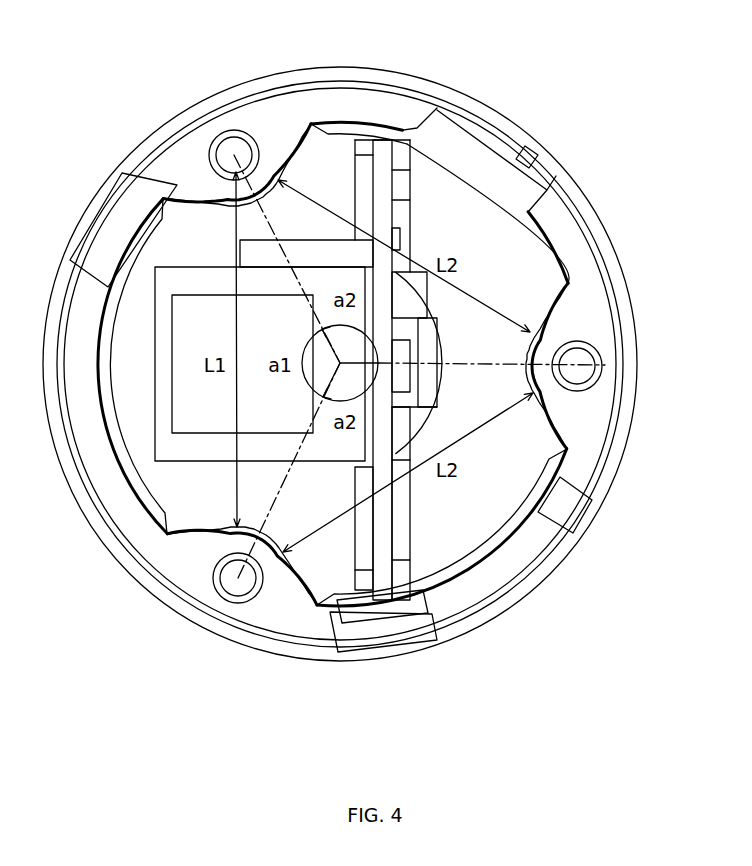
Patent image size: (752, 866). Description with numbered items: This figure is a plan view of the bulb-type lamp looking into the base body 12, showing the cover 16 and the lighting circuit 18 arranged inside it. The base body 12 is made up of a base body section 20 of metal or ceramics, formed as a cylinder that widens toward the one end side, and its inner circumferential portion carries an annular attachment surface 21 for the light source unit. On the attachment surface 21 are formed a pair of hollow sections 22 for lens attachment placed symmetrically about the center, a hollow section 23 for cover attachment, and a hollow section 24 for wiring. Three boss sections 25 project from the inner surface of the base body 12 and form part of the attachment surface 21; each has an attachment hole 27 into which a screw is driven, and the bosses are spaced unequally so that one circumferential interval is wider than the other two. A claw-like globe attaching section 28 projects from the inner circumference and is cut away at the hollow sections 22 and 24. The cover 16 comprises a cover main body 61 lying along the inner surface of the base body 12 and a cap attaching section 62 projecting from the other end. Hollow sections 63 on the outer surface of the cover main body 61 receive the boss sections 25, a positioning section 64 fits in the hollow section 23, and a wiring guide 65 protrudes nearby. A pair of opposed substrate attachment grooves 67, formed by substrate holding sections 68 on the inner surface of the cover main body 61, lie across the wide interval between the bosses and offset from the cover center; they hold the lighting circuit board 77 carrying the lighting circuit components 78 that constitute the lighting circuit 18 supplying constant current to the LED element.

The base body 12 is at (346, 364).
The cover 16 is at (96, 432).
The lighting circuit 18 is at (402, 503).
The base body section 20 is at (562, 177).
The attachment surface 21 is at (310, 105).
The hollow sections for lens attachment 22 is at (103, 212).
The hollow section for cover attachment 23 is at (487, 134).
The hollow section for wiring 24 is at (390, 637).
The boss sections 25 is at (198, 167).
The attachment holes 27 is at (232, 145).
The globe attaching section 28 is at (590, 232).
The cover main body 61 is at (118, 457).
The cap attaching section 62 is at (413, 427).
The hollow sections 63 is at (197, 198).
The positioning section 64 is at (498, 162).
The wiring guide 65 is at (400, 608).
The substrate attachment grooves 67 is at (380, 148).
The substrate holding sections 68 is at (402, 187).
The lighting circuit board 77 is at (380, 218).
The lighting circuit components 78 is at (158, 347).